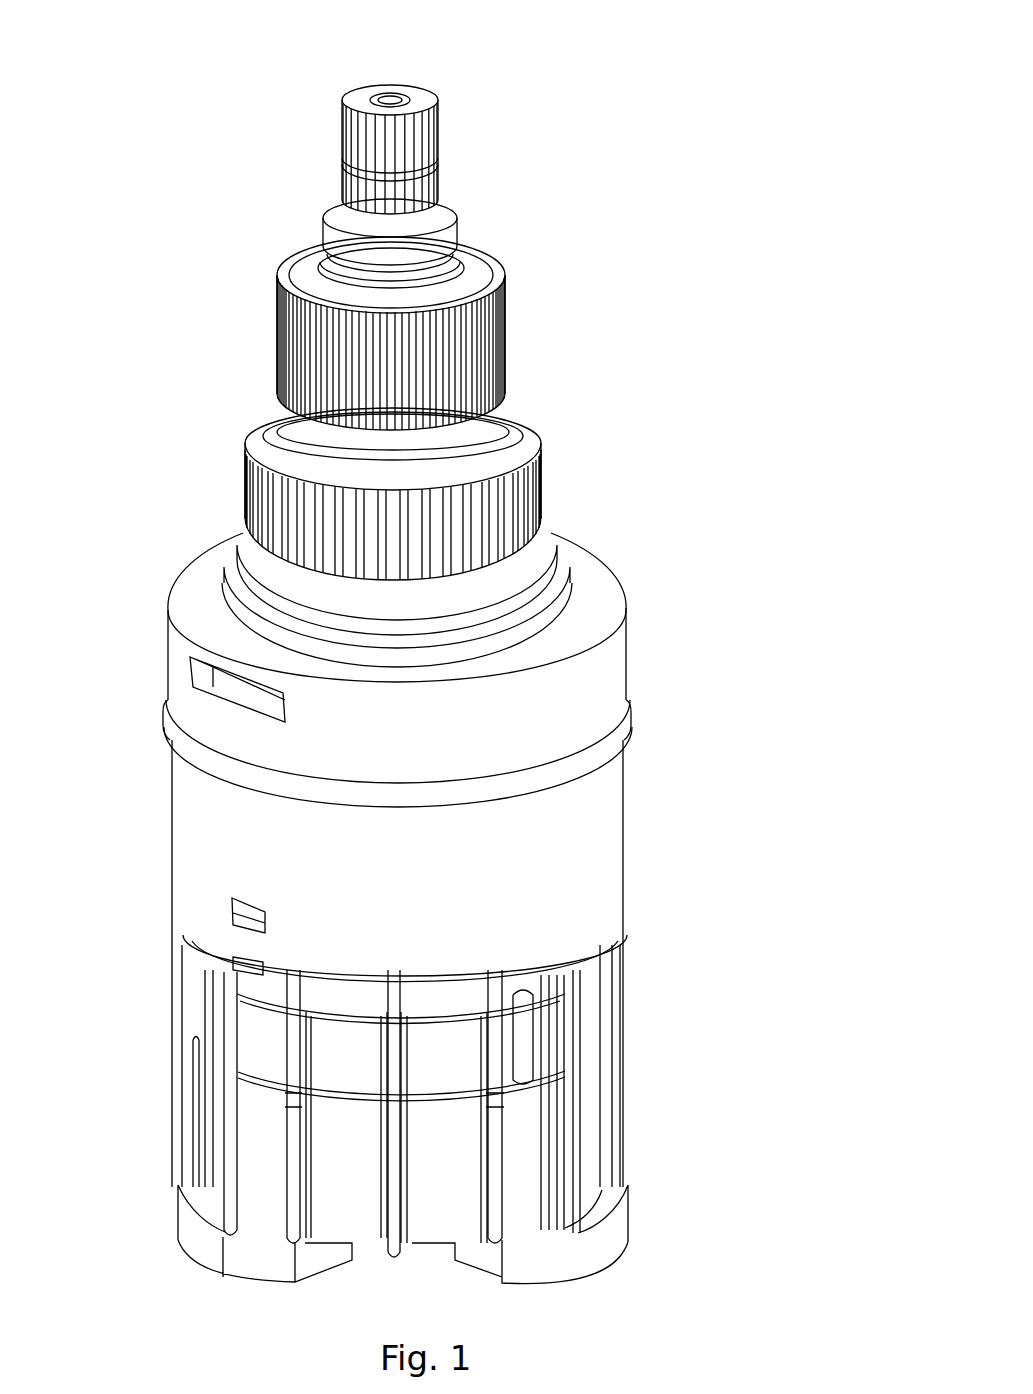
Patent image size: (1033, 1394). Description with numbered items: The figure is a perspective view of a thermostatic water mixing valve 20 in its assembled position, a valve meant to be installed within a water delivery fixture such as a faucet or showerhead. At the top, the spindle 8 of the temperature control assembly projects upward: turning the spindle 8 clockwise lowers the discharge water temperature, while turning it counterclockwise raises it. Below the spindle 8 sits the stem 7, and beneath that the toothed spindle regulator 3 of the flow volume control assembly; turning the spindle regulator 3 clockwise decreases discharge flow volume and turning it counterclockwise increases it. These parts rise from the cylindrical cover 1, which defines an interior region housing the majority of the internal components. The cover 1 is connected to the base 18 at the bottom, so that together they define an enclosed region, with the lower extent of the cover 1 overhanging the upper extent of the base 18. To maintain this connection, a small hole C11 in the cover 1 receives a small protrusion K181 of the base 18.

The thermostatic water mixing valve 20 is at (745, 89).
The spindle 8 is at (456, 189).
The stem 7 is at (553, 323).
The spindle regulator 3 is at (530, 523).
The cover 1 is at (632, 824).
The base 18 is at (667, 1046).
The small hole C11 is at (230, 905).
The small protrusion K181 is at (237, 930).